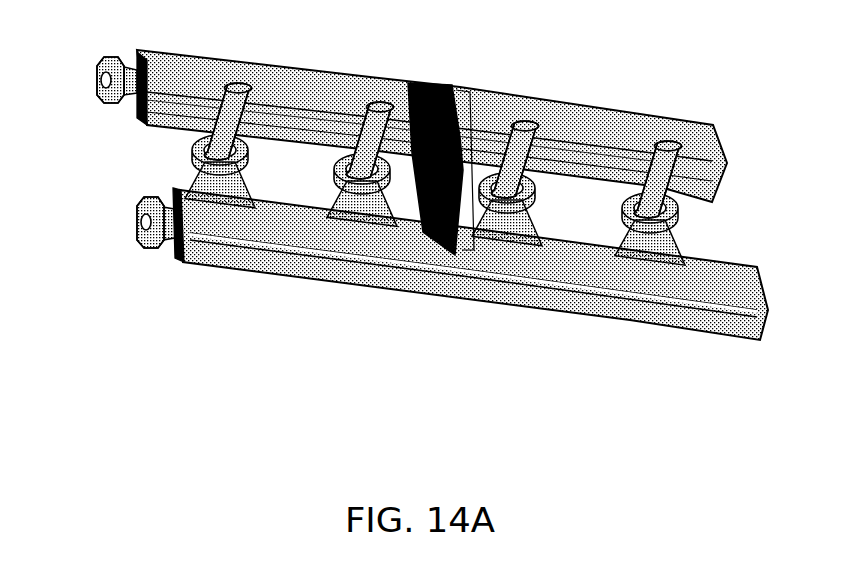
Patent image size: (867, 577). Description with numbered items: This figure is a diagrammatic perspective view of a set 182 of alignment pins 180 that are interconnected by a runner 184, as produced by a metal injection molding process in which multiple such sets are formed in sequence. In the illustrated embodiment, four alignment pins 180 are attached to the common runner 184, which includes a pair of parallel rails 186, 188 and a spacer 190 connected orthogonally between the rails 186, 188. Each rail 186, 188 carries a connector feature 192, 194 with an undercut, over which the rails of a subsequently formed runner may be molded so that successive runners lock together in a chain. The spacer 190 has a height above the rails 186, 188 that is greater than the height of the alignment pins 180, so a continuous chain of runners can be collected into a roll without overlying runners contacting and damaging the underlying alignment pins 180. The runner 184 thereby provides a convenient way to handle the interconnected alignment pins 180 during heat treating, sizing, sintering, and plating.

The alignment pin 180 is at (668, 143).
The set of alignment pins 182 is at (710, 223).
The runner 184 is at (578, 337).
The rail 186 is at (283, 70).
The rail 188 is at (323, 262).
The spacer 190 is at (437, 80).
The connector feature 192 is at (108, 57).
The connector feature 194 is at (145, 197).